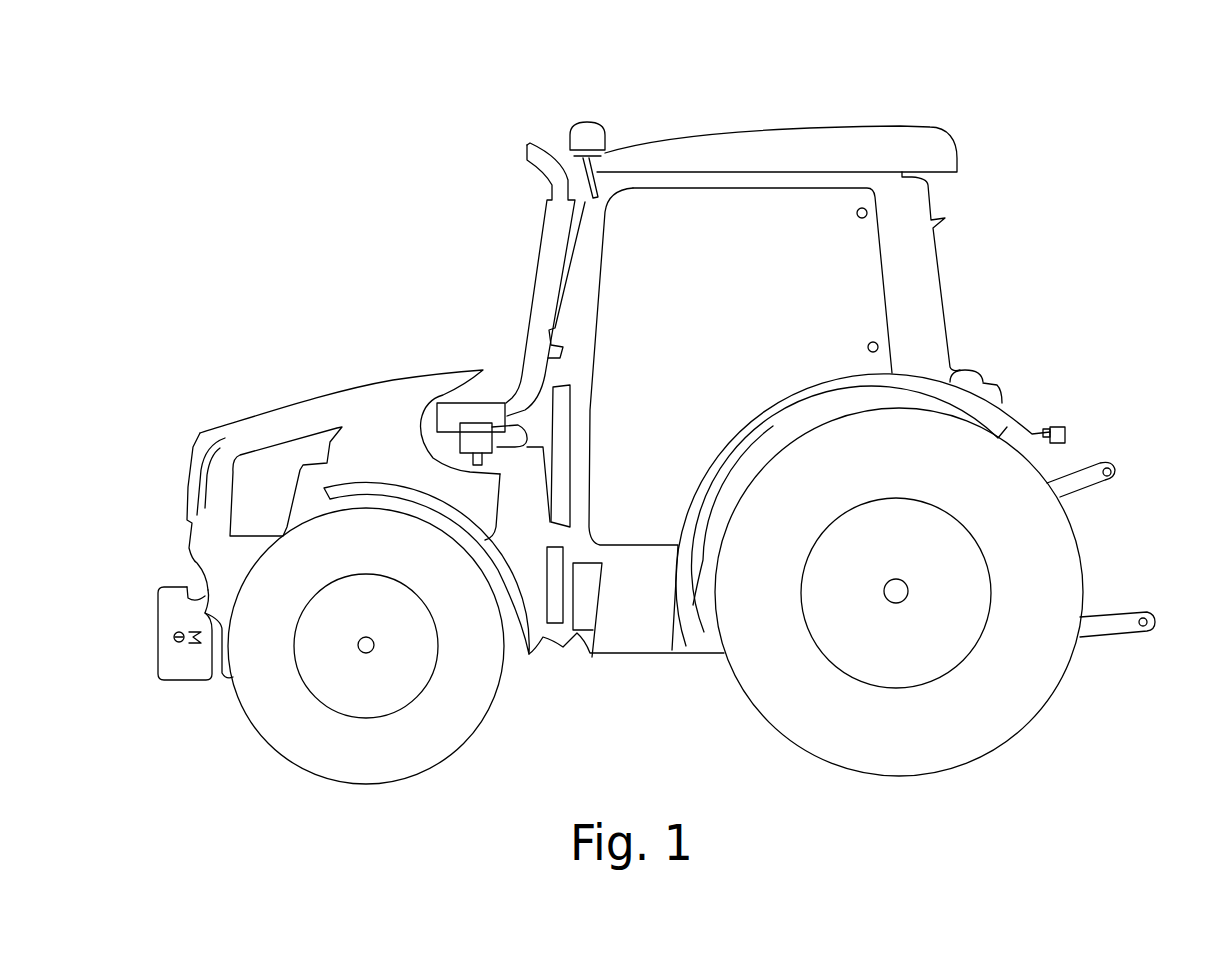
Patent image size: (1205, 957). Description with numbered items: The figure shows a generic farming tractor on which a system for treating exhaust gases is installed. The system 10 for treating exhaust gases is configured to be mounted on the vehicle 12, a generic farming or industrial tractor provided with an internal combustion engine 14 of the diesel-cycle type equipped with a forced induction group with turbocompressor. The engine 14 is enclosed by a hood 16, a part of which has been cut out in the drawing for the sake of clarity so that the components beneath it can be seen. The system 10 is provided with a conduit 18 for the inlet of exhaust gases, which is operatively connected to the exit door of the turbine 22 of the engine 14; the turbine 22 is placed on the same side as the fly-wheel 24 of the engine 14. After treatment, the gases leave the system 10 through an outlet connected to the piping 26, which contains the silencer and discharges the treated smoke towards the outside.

The system for treating exhaust gases 10 is at (462, 408).
The vehicle 12 is at (893, 143).
The internal combustion engine 14 is at (520, 511).
The hood 16 is at (378, 410).
The conduit for the inlet of exhaust gases 18 is at (518, 424).
The turbine 22 is at (460, 432).
The fly-wheel 24 is at (557, 612).
The piping 26 is at (527, 400).